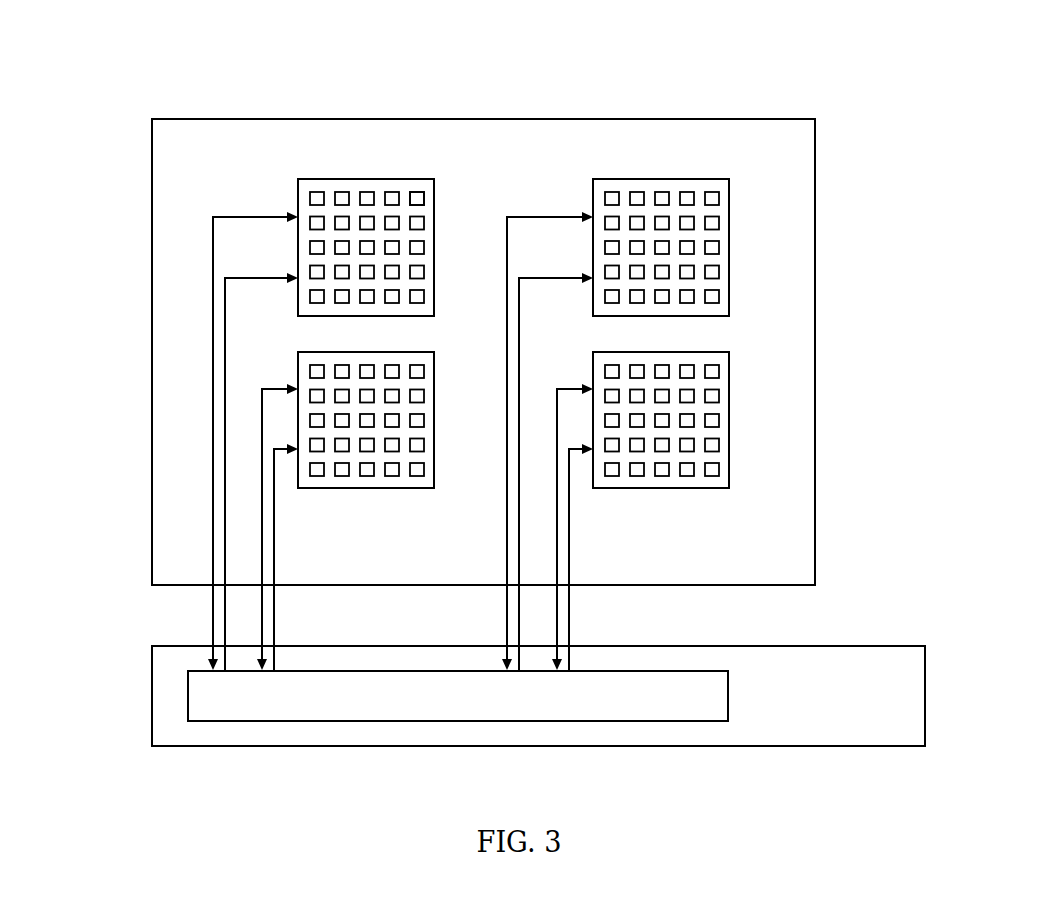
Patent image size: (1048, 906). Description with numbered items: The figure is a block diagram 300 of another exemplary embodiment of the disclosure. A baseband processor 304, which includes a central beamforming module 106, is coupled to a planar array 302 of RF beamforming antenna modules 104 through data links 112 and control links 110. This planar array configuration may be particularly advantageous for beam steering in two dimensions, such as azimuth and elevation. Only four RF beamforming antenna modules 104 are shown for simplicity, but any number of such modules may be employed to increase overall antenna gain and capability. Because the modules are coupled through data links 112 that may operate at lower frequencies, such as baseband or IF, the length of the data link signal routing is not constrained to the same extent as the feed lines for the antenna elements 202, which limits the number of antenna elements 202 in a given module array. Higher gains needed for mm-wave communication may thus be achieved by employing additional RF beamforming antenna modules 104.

The block diagram 300 is at (532, 36).
The planar array 302 is at (152, 168).
The baseband processor 304 is at (925, 683).
The central beamforming module 106 is at (188, 697).
The RF beamforming antenna module 104 is at (298, 190).
The antenna element 202 is at (423, 197).
The data link 112 is at (213, 340).
The control link 110 is at (225, 402).